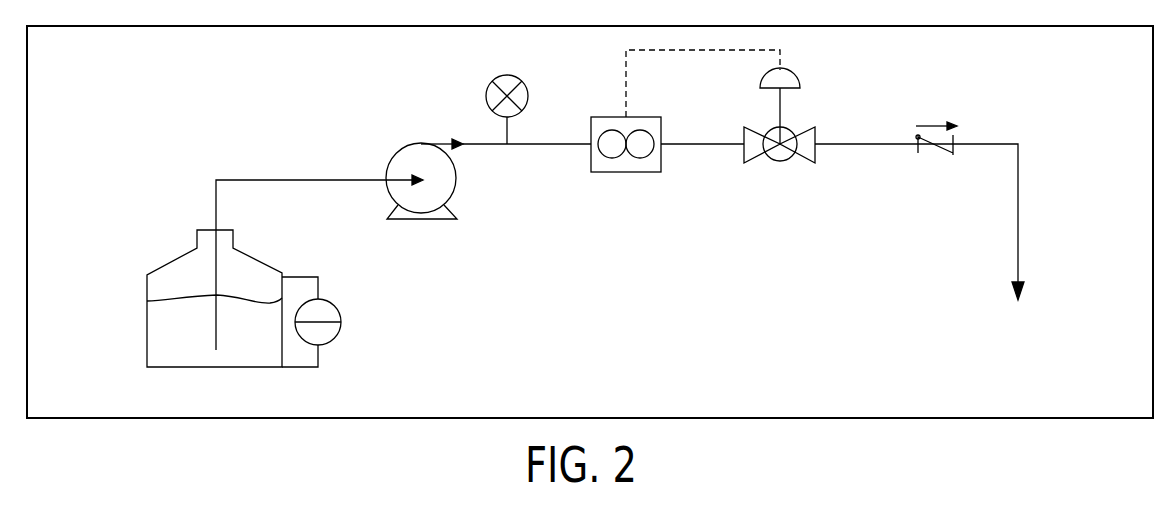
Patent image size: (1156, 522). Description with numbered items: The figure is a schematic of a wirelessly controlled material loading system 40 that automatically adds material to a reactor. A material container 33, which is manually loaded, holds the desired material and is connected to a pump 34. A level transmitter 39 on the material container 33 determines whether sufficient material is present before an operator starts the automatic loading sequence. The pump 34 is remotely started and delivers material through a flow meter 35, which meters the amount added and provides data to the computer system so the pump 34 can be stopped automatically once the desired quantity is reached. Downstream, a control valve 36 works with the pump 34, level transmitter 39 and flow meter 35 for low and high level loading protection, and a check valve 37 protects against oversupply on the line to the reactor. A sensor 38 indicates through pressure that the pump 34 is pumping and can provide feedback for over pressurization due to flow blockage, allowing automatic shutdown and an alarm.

The material container 33 is at (147, 289).
The pump 34 is at (391, 163).
The flow meter 35 is at (618, 173).
The control valve 36 is at (783, 164).
The check valve 37 is at (942, 153).
The sensor 38 is at (487, 92).
The level transmitter 39 is at (342, 320).
The material loading system 40 is at (166, 121).